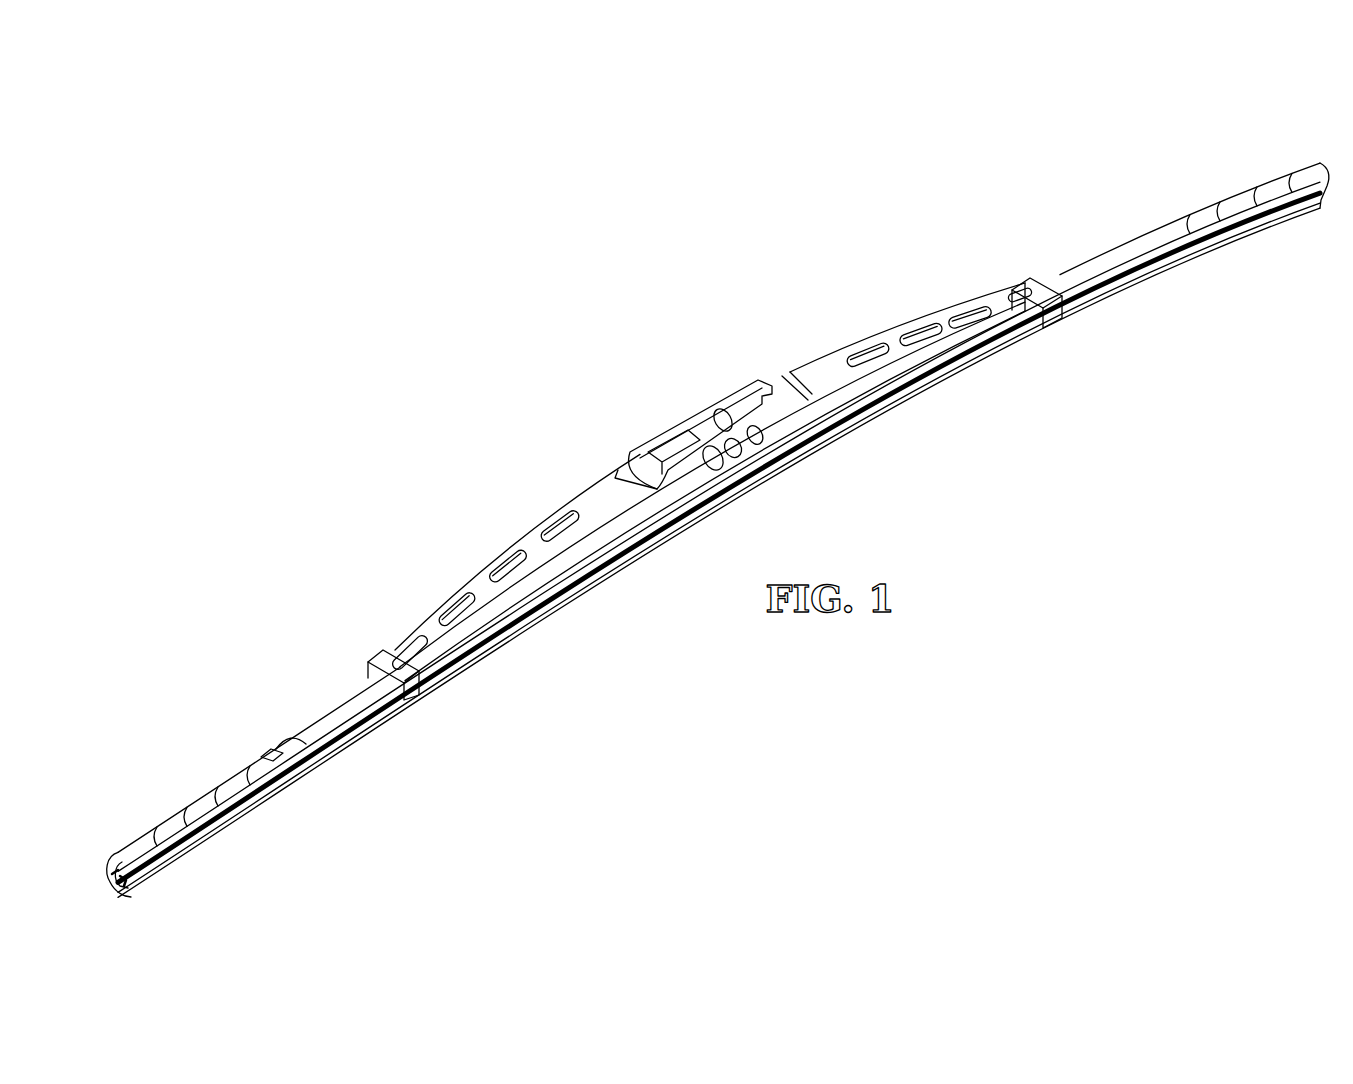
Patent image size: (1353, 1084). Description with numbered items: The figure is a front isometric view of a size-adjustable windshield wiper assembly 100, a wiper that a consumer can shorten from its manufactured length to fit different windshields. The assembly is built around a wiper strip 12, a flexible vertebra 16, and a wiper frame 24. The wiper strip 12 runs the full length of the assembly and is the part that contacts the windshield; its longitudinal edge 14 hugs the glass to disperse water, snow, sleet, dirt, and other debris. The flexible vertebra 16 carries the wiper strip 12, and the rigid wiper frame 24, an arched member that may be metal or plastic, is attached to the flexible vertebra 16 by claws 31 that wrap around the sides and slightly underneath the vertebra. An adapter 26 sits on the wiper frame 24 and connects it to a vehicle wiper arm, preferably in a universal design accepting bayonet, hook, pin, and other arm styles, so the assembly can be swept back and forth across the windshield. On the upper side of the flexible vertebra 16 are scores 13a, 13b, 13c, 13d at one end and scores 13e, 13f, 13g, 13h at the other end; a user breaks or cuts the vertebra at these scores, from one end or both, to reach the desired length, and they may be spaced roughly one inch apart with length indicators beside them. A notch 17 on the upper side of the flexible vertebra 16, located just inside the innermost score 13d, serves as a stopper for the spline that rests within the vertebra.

The size-adjustable windshield wiper assembly 100 is at (878, 218).
The wiper strip 12 is at (122, 886).
The score 13a is at (153, 833).
The score 13b is at (187, 811).
The score 13c is at (218, 790).
The score 13d is at (250, 769).
The score 13e is at (1190, 218).
The score 13f is at (1220, 205).
The score 13g is at (1257, 190).
The score 13h is at (1292, 177).
The longitudinal edge 14 is at (190, 849).
The flexible vertebra 16 is at (303, 728).
The notch 17 is at (308, 748).
The wiper frame 24 is at (480, 566).
The adapter 26 is at (665, 452).
The claws 31 is at (408, 690).